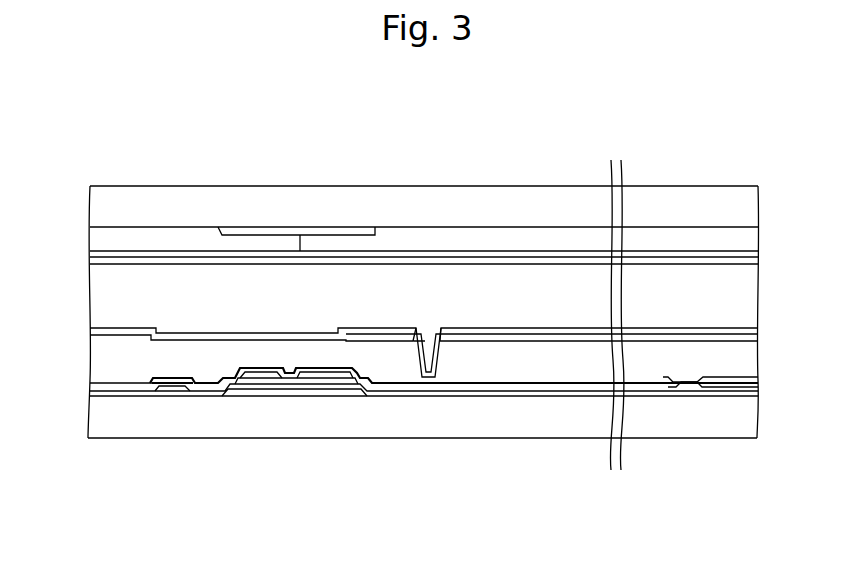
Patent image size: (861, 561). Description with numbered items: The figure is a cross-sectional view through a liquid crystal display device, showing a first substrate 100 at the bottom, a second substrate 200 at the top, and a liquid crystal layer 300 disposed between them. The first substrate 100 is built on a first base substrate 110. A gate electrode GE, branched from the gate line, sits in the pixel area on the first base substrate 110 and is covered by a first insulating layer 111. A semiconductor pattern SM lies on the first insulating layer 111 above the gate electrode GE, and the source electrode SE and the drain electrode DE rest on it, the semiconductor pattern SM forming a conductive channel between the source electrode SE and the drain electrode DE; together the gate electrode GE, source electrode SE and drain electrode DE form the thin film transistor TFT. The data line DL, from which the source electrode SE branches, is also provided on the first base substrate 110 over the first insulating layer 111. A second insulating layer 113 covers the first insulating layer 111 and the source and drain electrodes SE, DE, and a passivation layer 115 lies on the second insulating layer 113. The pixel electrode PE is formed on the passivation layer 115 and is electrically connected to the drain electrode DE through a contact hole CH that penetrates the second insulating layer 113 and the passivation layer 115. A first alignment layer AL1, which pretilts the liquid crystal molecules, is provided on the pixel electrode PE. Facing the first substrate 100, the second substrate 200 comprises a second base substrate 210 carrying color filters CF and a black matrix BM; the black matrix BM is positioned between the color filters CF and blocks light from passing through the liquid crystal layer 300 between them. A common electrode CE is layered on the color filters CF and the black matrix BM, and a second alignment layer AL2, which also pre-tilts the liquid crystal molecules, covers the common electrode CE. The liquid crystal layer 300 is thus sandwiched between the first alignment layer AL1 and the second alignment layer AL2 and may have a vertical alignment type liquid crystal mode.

The second base substrate 210 is at (94, 218).
The black matrix BM is at (272, 233).
The color filter CF is at (521, 238).
The common electrode CE is at (659, 255).
The second alignment layer AL2 is at (709, 262).
The second substrate 200 is at (776, 186).
The liquid crystal layer 300 is at (776, 265).
The first substrate 100 is at (776, 329).
The passivation layer 115 is at (95, 360).
The second insulating layer 113 is at (97, 387).
The first insulating layer 111 is at (97, 394).
The first base substrate 110 is at (97, 408).
The contact hole CH is at (427, 345).
The data line DL is at (171, 392).
The source electrode SE is at (263, 374).
The gate electrode GE is at (288, 394).
The drain electrode DE is at (313, 376).
The semiconductor pattern SM is at (342, 380).
The thin film transistor TFT is at (365, 502).
The pixel electrode PE is at (652, 340).
The first alignment layer AL1 is at (722, 330).